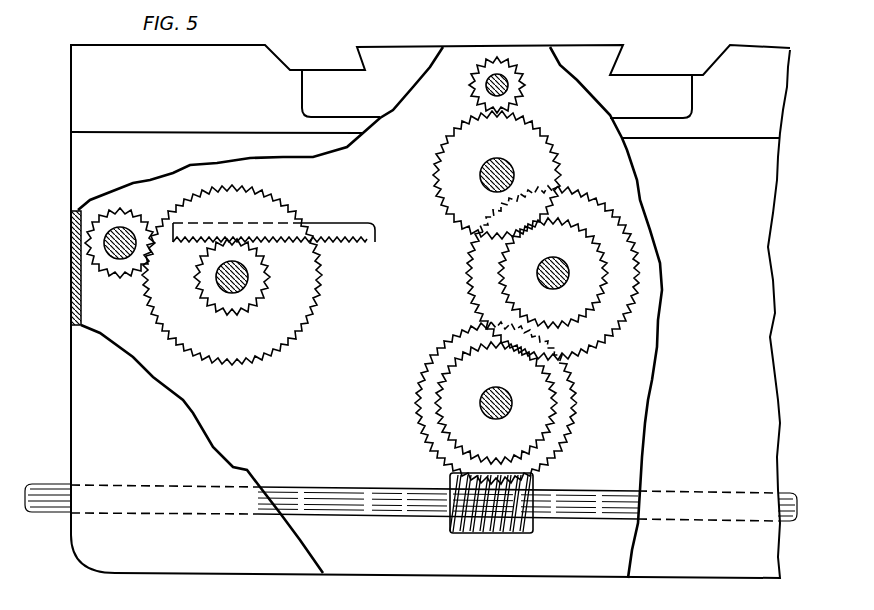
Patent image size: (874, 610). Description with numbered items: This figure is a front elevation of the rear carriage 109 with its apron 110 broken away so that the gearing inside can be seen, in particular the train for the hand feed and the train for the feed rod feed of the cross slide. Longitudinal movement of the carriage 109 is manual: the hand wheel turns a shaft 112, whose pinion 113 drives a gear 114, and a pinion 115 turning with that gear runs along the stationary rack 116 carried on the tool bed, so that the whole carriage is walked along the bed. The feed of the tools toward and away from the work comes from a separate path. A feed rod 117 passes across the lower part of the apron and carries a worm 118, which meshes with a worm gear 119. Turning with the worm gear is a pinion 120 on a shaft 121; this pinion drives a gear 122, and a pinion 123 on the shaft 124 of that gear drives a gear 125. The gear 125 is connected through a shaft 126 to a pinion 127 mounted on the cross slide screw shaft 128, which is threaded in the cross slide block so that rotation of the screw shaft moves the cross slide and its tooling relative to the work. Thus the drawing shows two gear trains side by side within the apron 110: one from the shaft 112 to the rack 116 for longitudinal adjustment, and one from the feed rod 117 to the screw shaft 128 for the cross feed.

The carriage 109 is at (82, 73).
The apron 110 is at (92, 182).
The shaft 112 is at (130, 228).
The pinion 113 is at (126, 258).
The gear 114 is at (254, 363).
The pinion 115 is at (231, 312).
The stationary rack 116 is at (341, 231).
The feed rod 117 is at (340, 489).
The worm 118 is at (480, 533).
The worm gear 119 is at (437, 348).
The pinion 120 is at (440, 380).
The shaft 121 is at (480, 401).
The gear 122 is at (472, 248).
The pinion 123 is at (500, 268).
The shaft 124 is at (540, 280).
The gear 125 is at (437, 152).
The shaft 126 is at (480, 175).
The pinion 127 is at (473, 95).
The cross slide screw shaft 128 is at (489, 81).